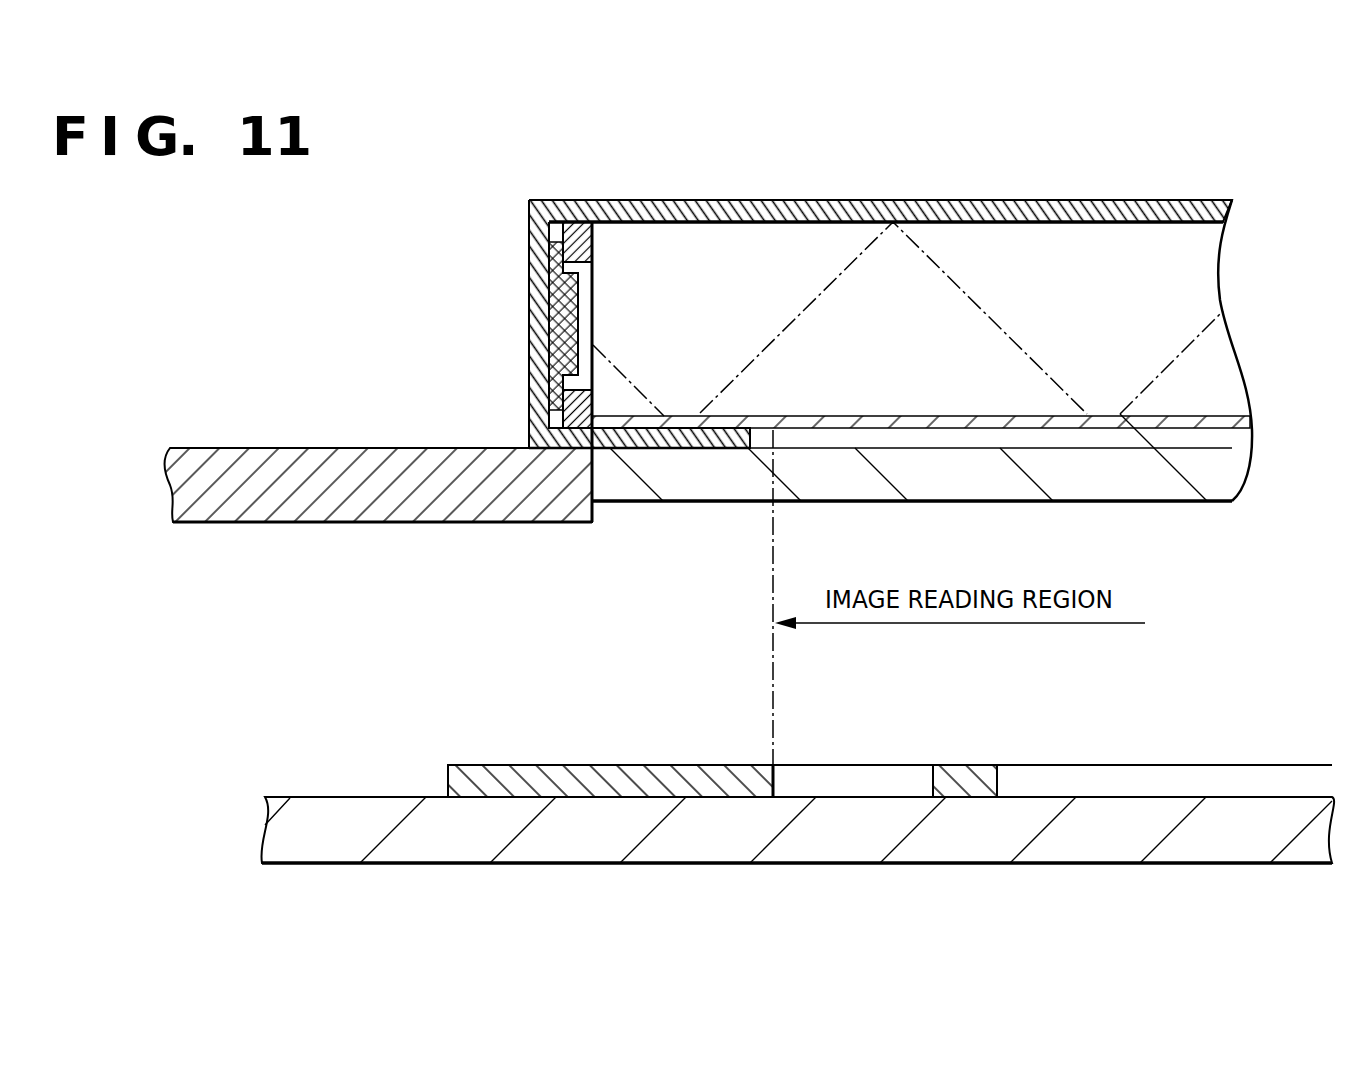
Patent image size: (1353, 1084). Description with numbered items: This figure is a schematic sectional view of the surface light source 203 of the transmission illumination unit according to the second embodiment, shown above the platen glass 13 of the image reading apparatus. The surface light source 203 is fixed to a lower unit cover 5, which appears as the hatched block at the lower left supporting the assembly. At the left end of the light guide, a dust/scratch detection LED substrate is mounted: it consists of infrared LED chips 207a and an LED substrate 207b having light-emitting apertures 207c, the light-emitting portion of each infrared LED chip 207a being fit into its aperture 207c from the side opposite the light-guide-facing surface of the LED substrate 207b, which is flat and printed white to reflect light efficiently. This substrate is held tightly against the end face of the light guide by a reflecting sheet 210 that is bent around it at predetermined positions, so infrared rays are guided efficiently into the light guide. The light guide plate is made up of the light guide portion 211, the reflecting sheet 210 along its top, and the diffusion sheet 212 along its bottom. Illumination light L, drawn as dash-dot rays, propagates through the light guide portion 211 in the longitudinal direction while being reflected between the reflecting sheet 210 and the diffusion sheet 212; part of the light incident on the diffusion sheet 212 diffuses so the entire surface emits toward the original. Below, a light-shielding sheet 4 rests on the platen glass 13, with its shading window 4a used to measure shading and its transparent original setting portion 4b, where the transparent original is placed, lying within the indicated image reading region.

The surface light source 203 is at (1150, 142).
The infrared LED chip 207a is at (537, 312).
The LED substrate 207b is at (568, 252).
The light-emitting aperture 207c is at (597, 307).
The reflecting sheet 210 is at (880, 215).
The light guide portion 211 is at (767, 237).
The diffusion sheet 212 is at (1188, 421).
The illumination light L is at (960, 285).
The lower unit cover 5 is at (362, 470).
The light-shielding sheet 4 is at (612, 765).
The shading window 4a is at (852, 765).
The transparent original setting portion 4b is at (1157, 765).
The platen glass 13 is at (788, 850).